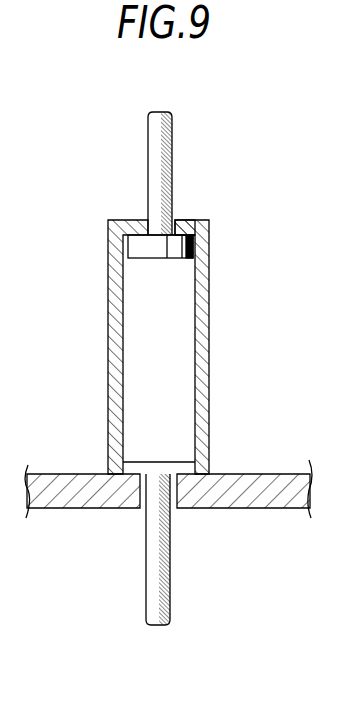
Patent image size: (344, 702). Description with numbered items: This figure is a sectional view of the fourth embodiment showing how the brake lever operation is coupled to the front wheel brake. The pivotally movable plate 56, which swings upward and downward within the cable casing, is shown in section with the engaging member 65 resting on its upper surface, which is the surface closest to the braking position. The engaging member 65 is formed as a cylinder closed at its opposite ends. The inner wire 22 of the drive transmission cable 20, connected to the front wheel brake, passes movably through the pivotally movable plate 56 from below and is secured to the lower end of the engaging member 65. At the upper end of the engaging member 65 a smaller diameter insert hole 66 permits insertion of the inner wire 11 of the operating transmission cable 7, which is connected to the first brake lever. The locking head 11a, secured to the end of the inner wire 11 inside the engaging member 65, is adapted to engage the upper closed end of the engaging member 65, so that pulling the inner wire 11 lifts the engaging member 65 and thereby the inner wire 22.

The operating transmission cable 7 is at (143, 165).
The inner wire 11 is at (172, 150).
The locking head 11a is at (157, 258).
The engaging member 65 is at (113, 368).
The insert hole 66 is at (173, 216).
The pivotally movable plate 56 is at (247, 483).
The drive transmission cable 20 is at (140, 589).
The inner wire 22 is at (170, 553).